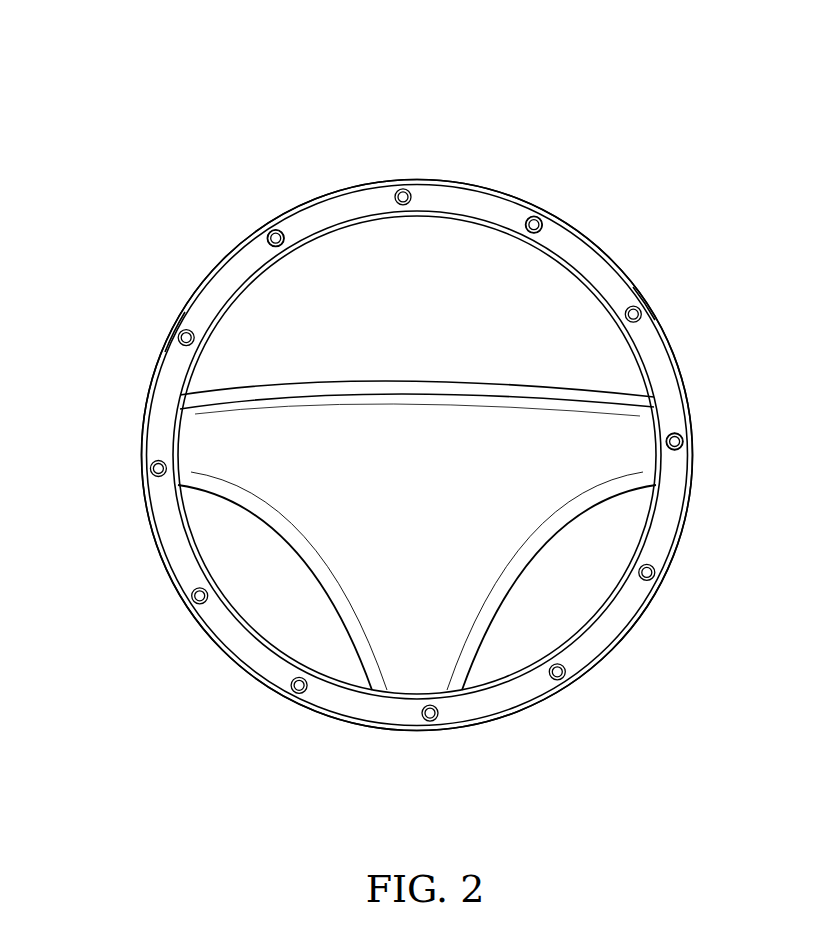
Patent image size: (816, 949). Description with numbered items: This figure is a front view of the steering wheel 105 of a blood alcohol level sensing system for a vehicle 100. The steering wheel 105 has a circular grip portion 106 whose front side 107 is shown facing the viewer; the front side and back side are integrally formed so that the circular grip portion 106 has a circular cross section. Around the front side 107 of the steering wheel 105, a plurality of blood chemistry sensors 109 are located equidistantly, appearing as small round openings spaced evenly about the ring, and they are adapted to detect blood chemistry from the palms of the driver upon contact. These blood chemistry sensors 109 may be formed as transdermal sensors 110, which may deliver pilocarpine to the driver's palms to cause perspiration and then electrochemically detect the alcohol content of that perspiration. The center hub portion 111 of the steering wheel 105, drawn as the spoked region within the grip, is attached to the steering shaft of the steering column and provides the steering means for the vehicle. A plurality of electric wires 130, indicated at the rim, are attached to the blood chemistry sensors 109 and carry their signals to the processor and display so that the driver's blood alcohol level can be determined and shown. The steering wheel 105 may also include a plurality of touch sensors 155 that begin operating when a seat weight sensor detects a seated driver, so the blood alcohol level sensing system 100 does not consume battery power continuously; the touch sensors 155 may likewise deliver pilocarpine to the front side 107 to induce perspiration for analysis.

The blood alcohol level sensing system 100 is at (660, 59).
The steering wheel 105 is at (410, 180).
The circular grip portion 106 is at (162, 353).
The front side 107 is at (218, 293).
The blood chemistry sensors 109 is at (267, 240).
The transdermal sensors 110 is at (279, 230).
The center hub portion 111 is at (401, 456).
The electric wires 130 is at (615, 608).
The touch sensors 155 is at (272, 230).